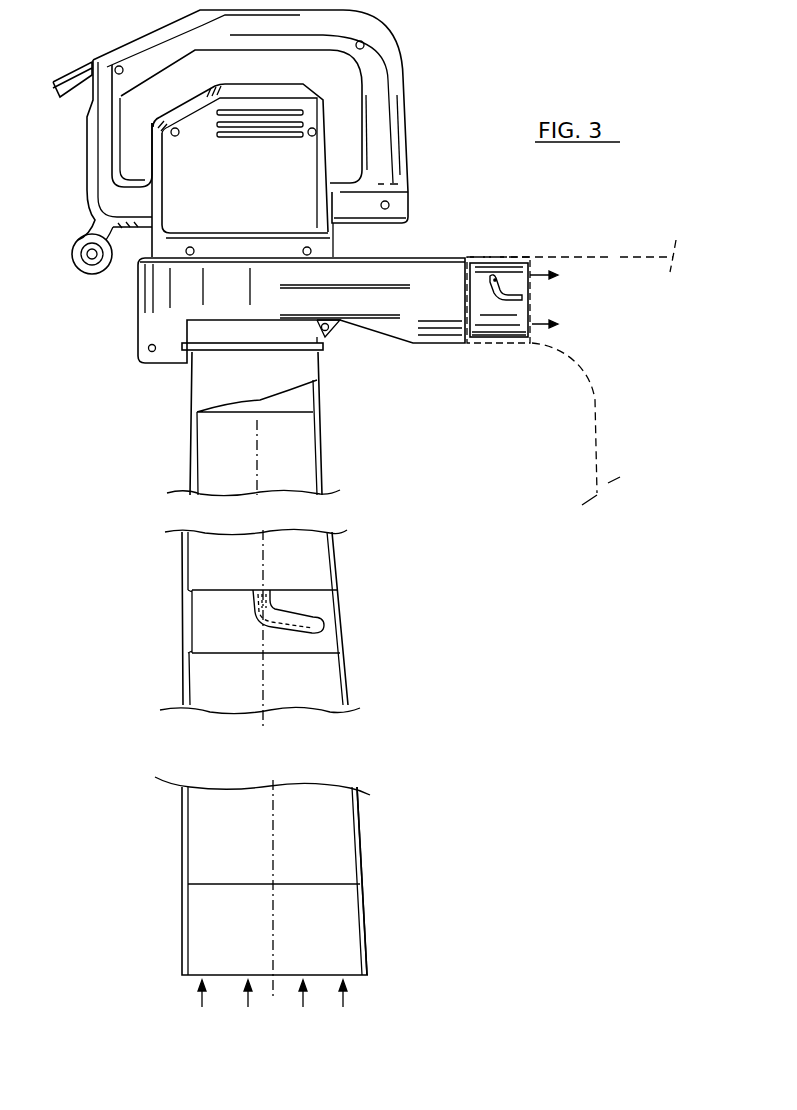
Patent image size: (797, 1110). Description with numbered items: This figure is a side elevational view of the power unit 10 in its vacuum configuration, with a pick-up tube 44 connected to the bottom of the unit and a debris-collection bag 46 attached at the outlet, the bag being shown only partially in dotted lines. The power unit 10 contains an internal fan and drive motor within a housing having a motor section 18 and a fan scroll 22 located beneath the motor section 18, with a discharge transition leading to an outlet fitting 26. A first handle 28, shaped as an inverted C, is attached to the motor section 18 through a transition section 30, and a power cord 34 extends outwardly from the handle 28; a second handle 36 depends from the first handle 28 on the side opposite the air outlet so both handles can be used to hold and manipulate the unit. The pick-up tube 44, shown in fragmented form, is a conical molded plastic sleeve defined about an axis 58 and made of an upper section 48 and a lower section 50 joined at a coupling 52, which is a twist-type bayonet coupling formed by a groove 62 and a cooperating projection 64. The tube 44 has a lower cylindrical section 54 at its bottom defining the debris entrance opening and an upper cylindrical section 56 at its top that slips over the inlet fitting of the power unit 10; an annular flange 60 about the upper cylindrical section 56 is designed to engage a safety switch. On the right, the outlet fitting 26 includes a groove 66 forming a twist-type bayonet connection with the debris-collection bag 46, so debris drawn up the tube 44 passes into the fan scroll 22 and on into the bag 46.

The power unit 10 is at (430, 121).
The motor section 18 is at (220, 163).
The fan scroll 22 is at (273, 297).
The outlet fitting 26 is at (506, 272).
The first handle 28 is at (390, 40).
The transition section 30 is at (357, 208).
The power cord 34 is at (68, 78).
The second handle 36 is at (90, 274).
The pick-up tube 44 is at (352, 566).
The debris-collection bag 46 is at (613, 255).
The upper section 48 is at (193, 447).
The lower section 50 is at (182, 823).
The coupling 52 is at (176, 590).
The lower cylindrical section 54 is at (368, 921).
The upper cylindrical section 56 is at (326, 396).
The axis 58 is at (262, 460).
The flange 60 is at (187, 348).
The groove 62 is at (268, 592).
The projection 64 is at (325, 624).
The groove 66 is at (522, 298).